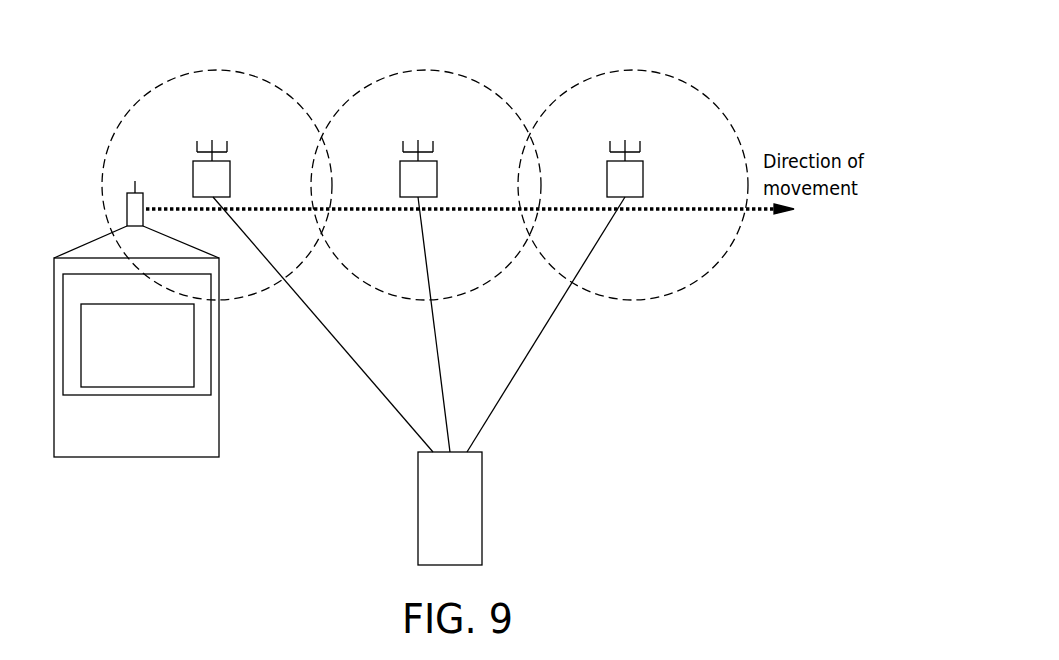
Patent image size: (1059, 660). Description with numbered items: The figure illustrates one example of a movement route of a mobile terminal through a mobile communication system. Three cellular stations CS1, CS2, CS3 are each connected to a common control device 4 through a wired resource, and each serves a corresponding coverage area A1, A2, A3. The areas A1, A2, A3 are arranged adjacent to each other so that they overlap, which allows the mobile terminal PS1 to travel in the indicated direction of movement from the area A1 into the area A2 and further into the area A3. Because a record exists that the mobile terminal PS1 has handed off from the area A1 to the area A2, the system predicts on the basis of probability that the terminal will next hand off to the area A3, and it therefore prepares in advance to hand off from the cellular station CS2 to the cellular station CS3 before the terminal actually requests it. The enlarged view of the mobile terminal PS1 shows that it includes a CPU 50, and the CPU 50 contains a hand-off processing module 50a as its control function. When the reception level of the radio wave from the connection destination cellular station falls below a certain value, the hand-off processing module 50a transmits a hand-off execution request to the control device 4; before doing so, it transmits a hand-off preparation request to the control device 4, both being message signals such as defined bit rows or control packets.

The area A1 is at (216, 69).
The area A2 is at (422, 69).
The area A3 is at (628, 69).
The cellular station CS1 is at (230, 172).
The cellular station CS2 is at (437, 172).
The cellular station CS3 is at (643, 172).
The mobile terminal PS1 is at (140, 186).
The CPU 50 is at (211, 326).
The hand-off processing module 50a is at (194, 363).
The control device 4 is at (482, 507).